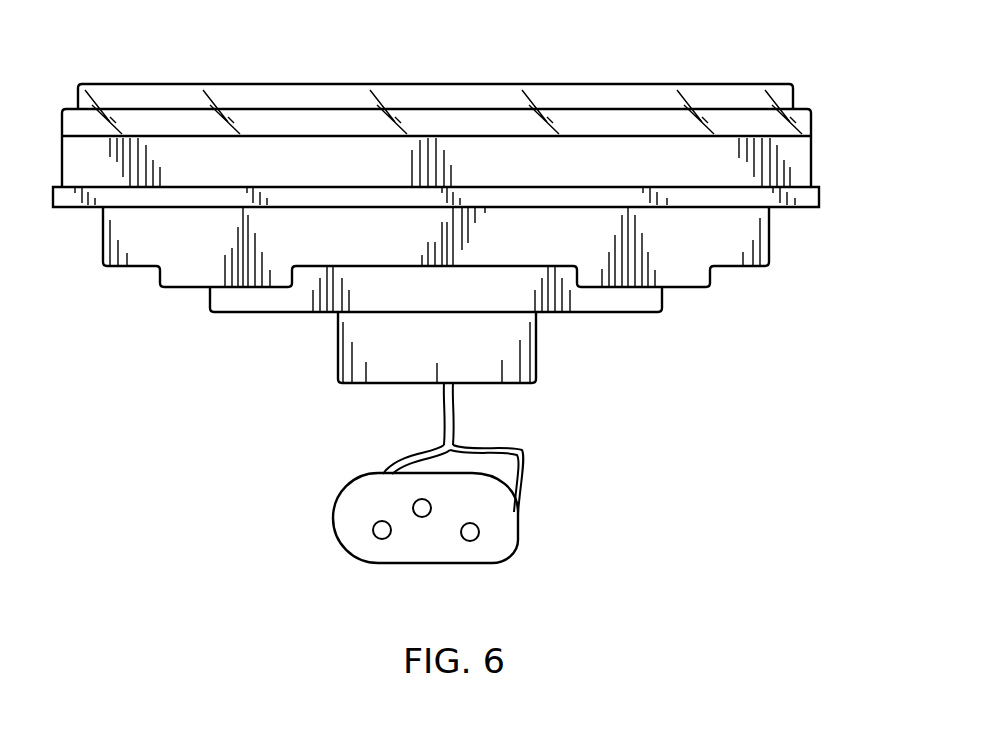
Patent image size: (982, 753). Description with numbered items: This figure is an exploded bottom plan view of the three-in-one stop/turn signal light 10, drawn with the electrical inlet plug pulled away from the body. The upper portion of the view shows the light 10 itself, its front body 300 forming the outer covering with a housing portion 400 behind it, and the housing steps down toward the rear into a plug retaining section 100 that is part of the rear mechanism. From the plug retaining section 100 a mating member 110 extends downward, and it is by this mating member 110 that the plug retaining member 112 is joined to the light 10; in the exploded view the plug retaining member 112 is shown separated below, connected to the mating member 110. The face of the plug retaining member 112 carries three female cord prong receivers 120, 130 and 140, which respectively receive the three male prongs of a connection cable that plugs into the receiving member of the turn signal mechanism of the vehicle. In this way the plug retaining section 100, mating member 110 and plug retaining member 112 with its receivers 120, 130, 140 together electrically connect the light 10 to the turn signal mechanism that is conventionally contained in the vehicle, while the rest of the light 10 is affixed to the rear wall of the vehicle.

The three-in-one stop/turn signal light 10 is at (754, 50).
The front body 300 is at (264, 90).
The housing 400 is at (782, 162).
The plug retaining section 100 is at (512, 344).
The mating member 110 is at (391, 462).
The plug retaining member 112 is at (538, 491).
The female cord prong receiver 120 is at (423, 517).
The female cord prong receiver 130 is at (377, 538).
The female cord prong receiver 140 is at (477, 538).